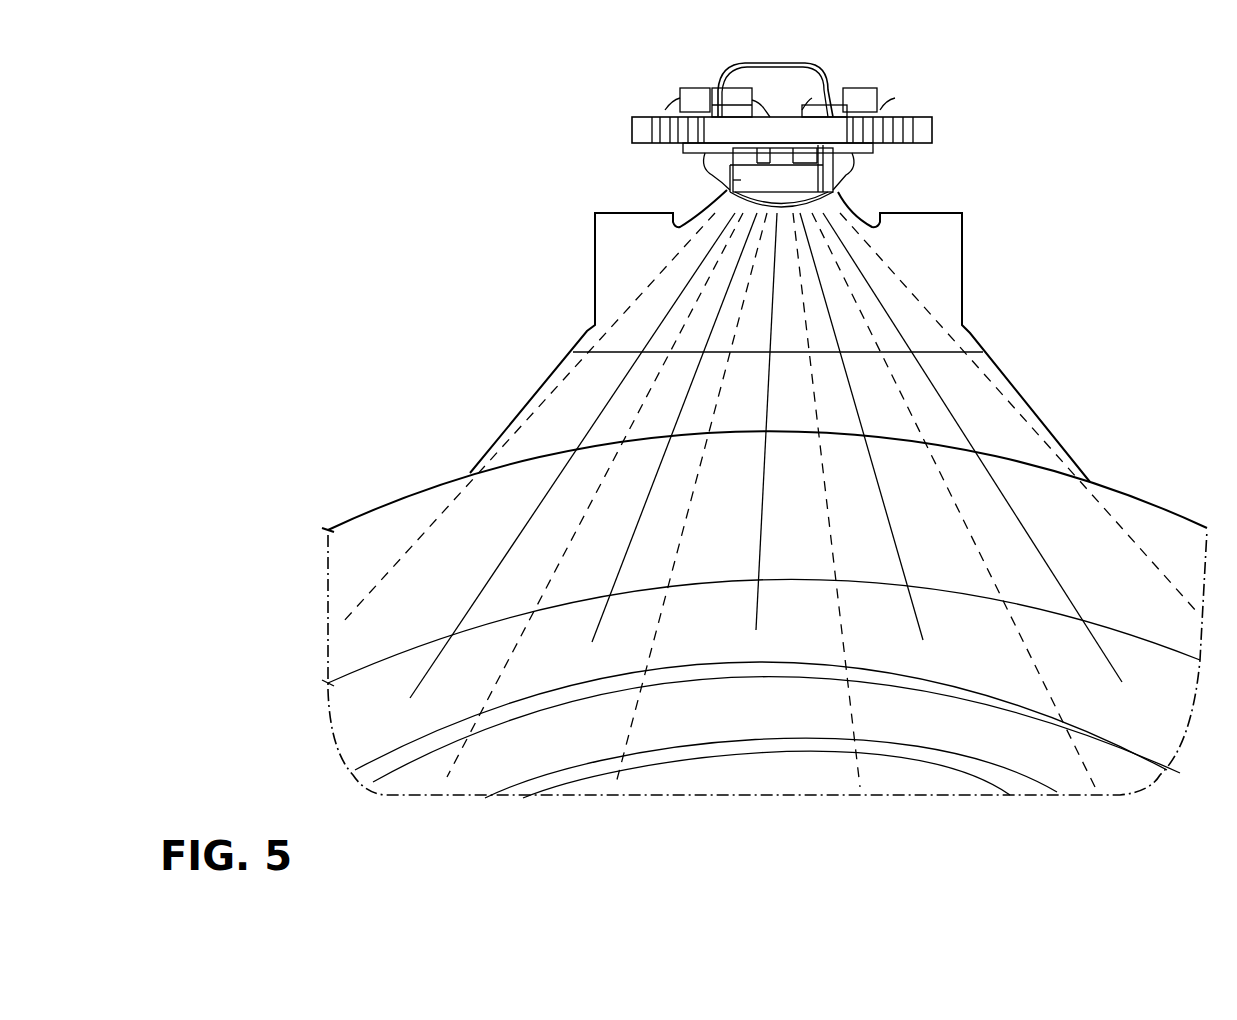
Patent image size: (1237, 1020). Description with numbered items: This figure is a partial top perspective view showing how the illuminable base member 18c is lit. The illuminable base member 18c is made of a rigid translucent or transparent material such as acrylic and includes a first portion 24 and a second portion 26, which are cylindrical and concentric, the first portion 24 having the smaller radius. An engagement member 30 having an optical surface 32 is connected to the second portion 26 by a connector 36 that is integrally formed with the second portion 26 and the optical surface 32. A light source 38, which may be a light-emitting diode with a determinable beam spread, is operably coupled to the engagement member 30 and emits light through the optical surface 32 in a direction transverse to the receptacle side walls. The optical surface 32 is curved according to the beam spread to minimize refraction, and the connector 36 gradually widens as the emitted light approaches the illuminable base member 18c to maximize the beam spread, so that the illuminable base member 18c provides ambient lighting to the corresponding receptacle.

The illuminable base member 18c is at (378, 488).
The first portion 24 is at (478, 658).
The second portion 26 is at (1127, 493).
The engagement member 30 is at (760, 138).
The optical surface 32 is at (693, 213).
The connector 36 is at (1020, 397).
The light source 38 is at (728, 182).